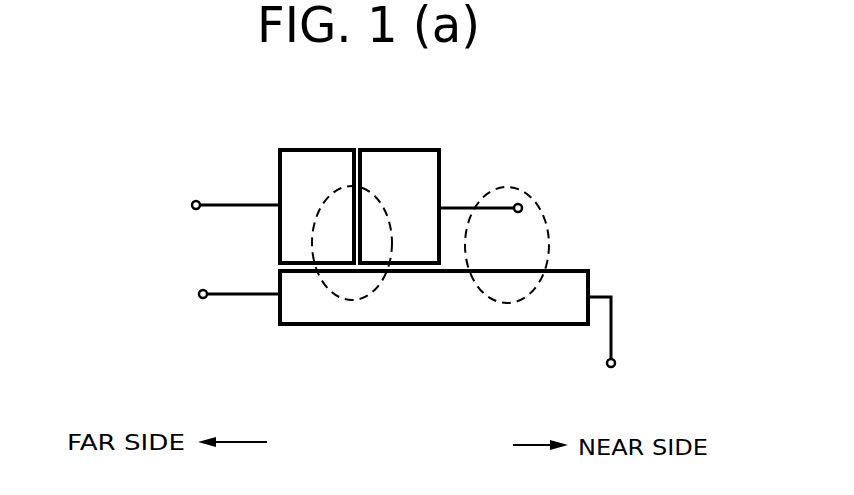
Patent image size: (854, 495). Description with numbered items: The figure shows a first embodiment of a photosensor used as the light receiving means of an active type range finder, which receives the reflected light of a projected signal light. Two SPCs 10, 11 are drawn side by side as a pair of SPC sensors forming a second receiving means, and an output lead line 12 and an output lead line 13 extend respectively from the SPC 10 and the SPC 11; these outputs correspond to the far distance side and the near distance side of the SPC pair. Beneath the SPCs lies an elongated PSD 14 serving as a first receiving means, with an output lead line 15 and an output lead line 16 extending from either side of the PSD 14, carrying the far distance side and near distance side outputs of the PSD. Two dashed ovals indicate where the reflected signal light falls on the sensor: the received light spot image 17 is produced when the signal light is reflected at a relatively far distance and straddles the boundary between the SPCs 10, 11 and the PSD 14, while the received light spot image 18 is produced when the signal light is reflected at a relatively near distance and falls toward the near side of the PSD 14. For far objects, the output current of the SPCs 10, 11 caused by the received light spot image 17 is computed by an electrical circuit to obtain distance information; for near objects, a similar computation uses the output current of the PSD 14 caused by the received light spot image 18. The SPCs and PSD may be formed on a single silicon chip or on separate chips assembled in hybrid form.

The SPC 10 is at (315, 167).
The SPC 11 is at (412, 168).
The output lead line 12 is at (238, 203).
The output lead line 13 is at (497, 208).
The PSD 14 is at (417, 310).
The output lead line 15 is at (245, 297).
The output lead line 16 is at (612, 325).
The received light spot image 17 is at (343, 302).
The received light spot image 18 is at (492, 303).